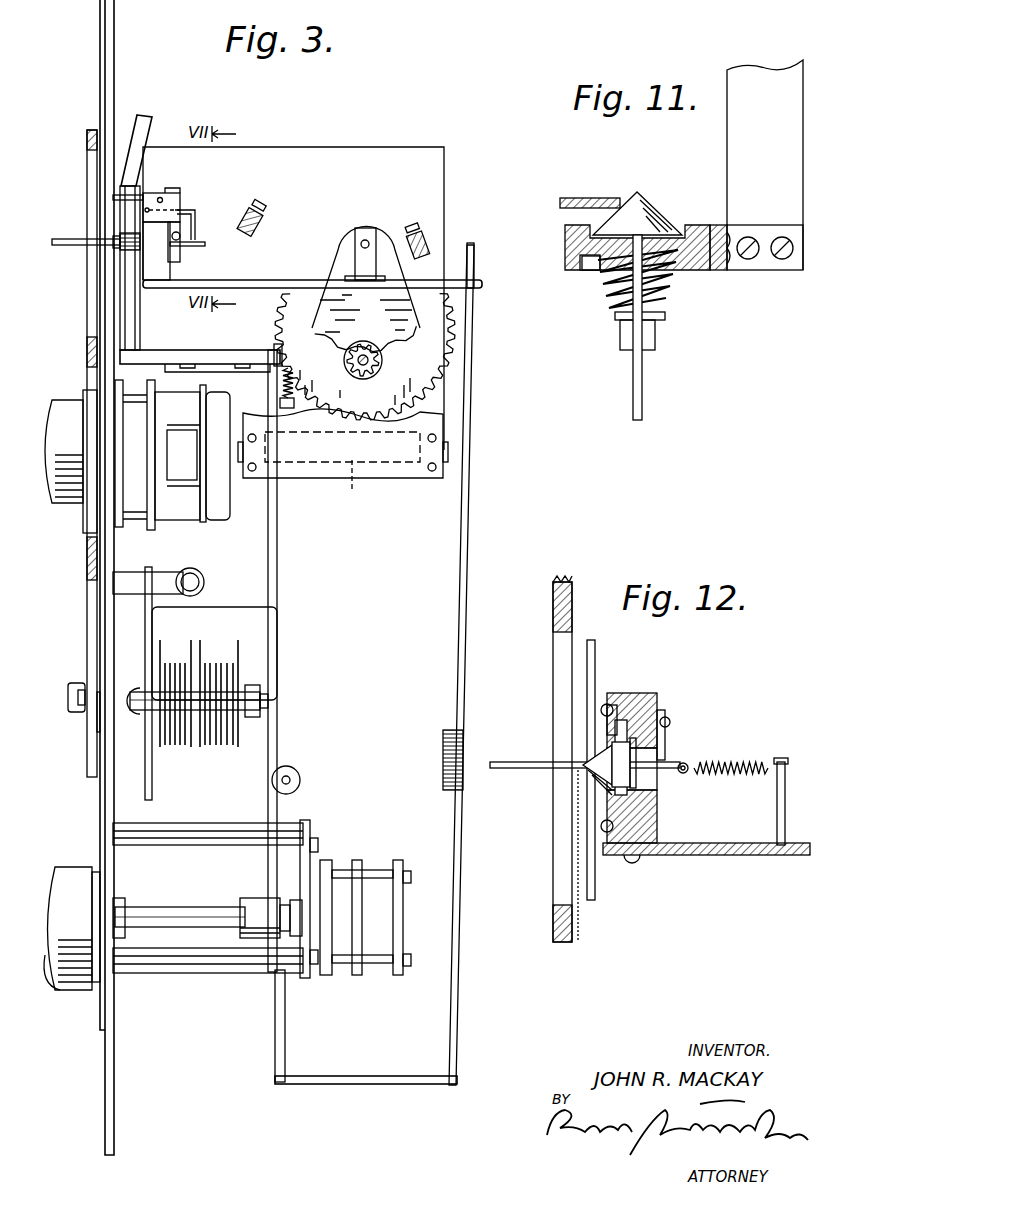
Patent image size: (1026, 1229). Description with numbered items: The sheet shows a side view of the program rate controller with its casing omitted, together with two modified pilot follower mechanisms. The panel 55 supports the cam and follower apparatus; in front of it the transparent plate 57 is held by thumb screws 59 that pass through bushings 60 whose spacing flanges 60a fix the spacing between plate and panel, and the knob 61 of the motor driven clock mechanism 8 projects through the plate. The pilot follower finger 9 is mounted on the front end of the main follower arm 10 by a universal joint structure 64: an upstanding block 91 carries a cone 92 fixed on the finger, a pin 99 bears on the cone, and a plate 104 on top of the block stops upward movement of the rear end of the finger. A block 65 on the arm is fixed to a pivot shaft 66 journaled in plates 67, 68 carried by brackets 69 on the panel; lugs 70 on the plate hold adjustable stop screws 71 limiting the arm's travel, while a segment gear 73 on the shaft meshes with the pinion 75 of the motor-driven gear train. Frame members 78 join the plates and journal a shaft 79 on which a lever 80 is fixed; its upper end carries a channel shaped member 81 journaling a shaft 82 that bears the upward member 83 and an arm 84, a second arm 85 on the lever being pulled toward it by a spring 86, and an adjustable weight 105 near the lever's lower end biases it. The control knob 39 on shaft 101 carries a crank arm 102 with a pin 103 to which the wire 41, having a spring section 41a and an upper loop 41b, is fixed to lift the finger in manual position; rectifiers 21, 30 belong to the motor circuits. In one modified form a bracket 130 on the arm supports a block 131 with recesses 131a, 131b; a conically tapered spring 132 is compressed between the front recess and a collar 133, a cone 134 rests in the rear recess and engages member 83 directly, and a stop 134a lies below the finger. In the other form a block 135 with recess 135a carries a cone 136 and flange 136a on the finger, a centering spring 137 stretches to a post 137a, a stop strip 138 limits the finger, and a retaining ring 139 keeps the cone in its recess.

In FIG. 3, the motor driven clock mechanism 8 is at (216, 516).
In FIG. 3, the pilot follower finger 9 is at (60, 246).
In FIG. 11, the pilot follower finger 9 is at (645, 372).
In FIG. 12, the pilot follower finger 9 is at (520, 767).
In FIG. 3, the main follower arm 10 is at (262, 282).
In FIG. 11, the main follower arm 10 is at (728, 117).
In FIG. 12, the main follower arm 10 is at (712, 856).
In FIG. 3, the rectifier 21 is at (166, 660).
In FIG. 3, the rectifier 30 is at (221, 660).
In FIG. 3, the control knob 39 is at (70, 878).
In FIG. 3, the wire 41 is at (453, 856).
In FIG. 3, the spring section 41a is at (443, 764).
In FIG. 3, the loop 41b is at (480, 282).
In FIG. 3, the panel 55 is at (108, 72).
In FIG. 12, the panel 55 is at (555, 916).
In FIG. 3, the plate 57 is at (92, 773).
In FIG. 3, the thumb screws 59 is at (70, 692).
In FIG. 3, the bushings 60 is at (93, 713).
In FIG. 3, the spacing flanges 60a is at (146, 645).
In FIG. 3, the knob 61 is at (60, 402).
In FIG. 3, the universal joint structure 64 is at (174, 194).
In FIG. 3, the block 65 is at (345, 272).
In FIG. 3, the pivot shaft 66 is at (378, 232).
In FIG. 3, the plate 67 is at (305, 480).
In FIG. 3, the plate 68 is at (322, 157).
In FIG. 3, the brackets 69 is at (118, 158).
In FIG. 3, the lugs 70 is at (260, 226).
In FIG. 3, the adjustable stop screws 71 is at (256, 204).
In FIG. 3, the segment gear 73 is at (365, 357).
In FIG. 3, the pinion 75 is at (370, 372).
In FIG. 3, the frame members 78 is at (256, 474).
In FIG. 3, the shaft 79 is at (362, 485).
In FIG. 3, the lever 80 is at (278, 560).
In FIG. 3, the channel shaped member 81 is at (160, 352).
In FIG. 3, the shaft 82 is at (203, 356).
In FIG. 3, the member 83 is at (141, 316).
In FIG. 11, the member 83 is at (578, 198).
In FIG. 12, the member 83 is at (596, 650).
In FIG. 3, the arm 84 is at (279, 346).
In FIG. 3, the arm 85 is at (296, 404).
In FIG. 3, the spring 86 is at (294, 380).
In FIG. 3, the block 91 is at (165, 268).
In FIG. 3, the cone 92 is at (182, 236).
In FIG. 3, the pin 99 is at (185, 248).
In FIG. 3, the shaft 101 is at (185, 910).
In FIG. 3, the crank arm 102 is at (285, 1018).
In FIG. 3, the pin 103 is at (368, 1076).
In FIG. 3, the plate 104 is at (196, 216).
In FIG. 3, the adjustable weight 105 is at (301, 778).
In FIG. 11, the bracket 130 is at (738, 272).
In FIG. 11, the block 131 is at (565, 270).
In FIG. 11, the recess 131a is at (592, 272).
In FIG. 11, the recess 131b is at (700, 224).
In FIG. 11, the conically tapered spring 132 is at (668, 292).
In FIG. 11, the collar 133 is at (666, 316).
In FIG. 11, the cone 134 is at (626, 196).
In FIG. 11, the stop 134a is at (656, 336).
In FIG. 12, the block 135 is at (655, 702).
In FIG. 12, the recess 135a is at (622, 702).
In FIG. 12, the cone 136 is at (612, 775).
In FIG. 12, the flange 136a is at (660, 784).
In FIG. 12, the centering spring 137 is at (714, 778).
In FIG. 12, the post 137a is at (778, 822).
In FIG. 12, the stop strip 138 is at (667, 752).
In FIG. 12, the retaining ring 139 is at (606, 848).